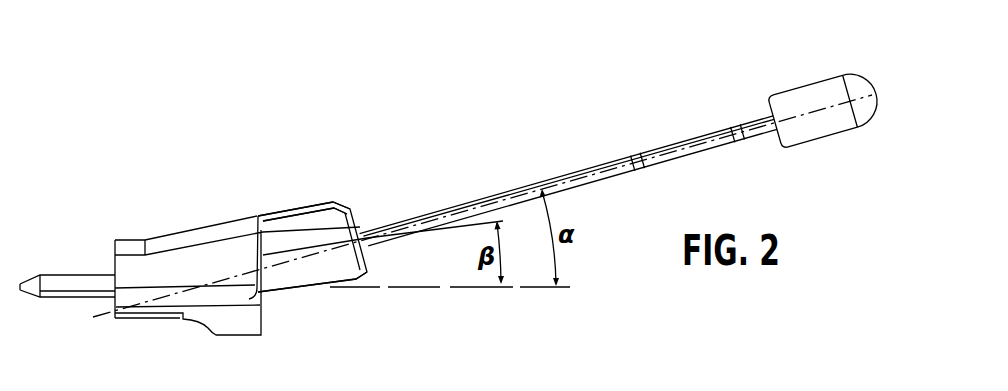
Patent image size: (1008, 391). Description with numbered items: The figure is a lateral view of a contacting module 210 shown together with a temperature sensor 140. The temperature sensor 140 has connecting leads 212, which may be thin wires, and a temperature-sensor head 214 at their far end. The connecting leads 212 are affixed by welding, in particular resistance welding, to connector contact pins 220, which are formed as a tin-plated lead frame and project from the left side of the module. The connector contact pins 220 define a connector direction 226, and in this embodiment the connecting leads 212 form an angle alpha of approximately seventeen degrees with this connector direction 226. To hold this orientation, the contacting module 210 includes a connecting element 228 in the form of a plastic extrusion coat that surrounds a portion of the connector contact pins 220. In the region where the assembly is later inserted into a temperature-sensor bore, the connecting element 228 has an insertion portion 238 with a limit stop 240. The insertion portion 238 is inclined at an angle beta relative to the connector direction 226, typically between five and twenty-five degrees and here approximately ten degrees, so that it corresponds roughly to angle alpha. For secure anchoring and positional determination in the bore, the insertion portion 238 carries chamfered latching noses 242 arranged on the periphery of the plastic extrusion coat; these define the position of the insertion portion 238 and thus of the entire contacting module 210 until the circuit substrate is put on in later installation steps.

The temperature sensor 140 is at (682, 91).
The contacting module 210 is at (164, 198).
The connecting leads 212 is at (513, 189).
The temperature-sensor head 214 is at (812, 92).
The connector contact pins 220 is at (72, 282).
The connector direction 226 is at (460, 289).
The connecting element 228 is at (318, 202).
The insertion portion 238 is at (285, 268).
The limit stop 240 is at (268, 210).
The latching noses 242 is at (344, 207).